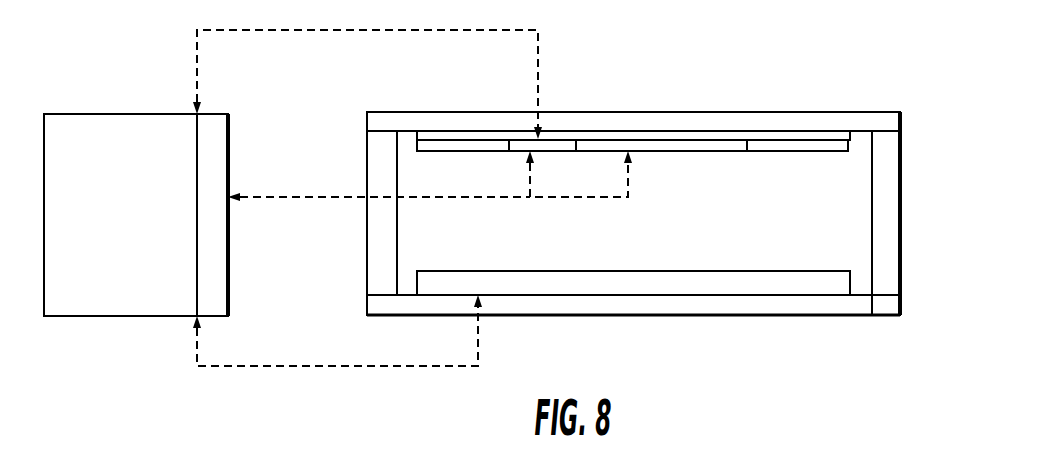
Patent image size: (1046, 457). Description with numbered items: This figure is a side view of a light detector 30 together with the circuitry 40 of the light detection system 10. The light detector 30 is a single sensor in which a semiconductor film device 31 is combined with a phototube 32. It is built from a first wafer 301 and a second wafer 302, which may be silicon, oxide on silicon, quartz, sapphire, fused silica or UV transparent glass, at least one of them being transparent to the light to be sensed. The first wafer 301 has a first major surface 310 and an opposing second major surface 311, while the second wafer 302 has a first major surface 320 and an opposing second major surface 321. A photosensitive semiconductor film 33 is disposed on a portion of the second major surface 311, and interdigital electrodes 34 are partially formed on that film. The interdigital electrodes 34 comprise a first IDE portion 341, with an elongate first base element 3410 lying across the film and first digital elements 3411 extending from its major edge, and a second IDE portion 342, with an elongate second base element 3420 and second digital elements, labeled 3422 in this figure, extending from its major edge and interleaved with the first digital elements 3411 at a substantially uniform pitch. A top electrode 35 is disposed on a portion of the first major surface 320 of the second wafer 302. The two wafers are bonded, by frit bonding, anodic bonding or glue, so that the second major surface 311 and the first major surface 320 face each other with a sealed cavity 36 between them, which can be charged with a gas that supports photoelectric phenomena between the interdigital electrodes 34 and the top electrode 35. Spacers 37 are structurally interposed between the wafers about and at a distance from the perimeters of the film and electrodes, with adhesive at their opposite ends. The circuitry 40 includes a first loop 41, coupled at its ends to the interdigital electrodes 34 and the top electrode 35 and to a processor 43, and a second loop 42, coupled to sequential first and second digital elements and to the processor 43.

The light detection system 10 is at (301, 108).
The light detector 30 is at (875, 112).
The first wafer 301 is at (865, 125).
The first major surface 310 is at (900, 112).
The second major surface 311 is at (900, 140).
The semiconductor film device 31 is at (748, 119).
The phototube 32 is at (712, 298).
The first major surface 320 is at (885, 295).
The second wafer 302 is at (872, 305).
The second major surface 321 is at (893, 318).
The photosensitive semiconductor film 33 is at (718, 132).
The interdigital electrodes 34 is at (657, 137).
The first IDE portion 341 is at (475, 146).
The first base element 3410 is at (452, 153).
The first digital elements 3411 is at (541, 152).
The second IDE portion 342 is at (810, 148).
The second base element 3420 is at (830, 152).
The second electrode 3422 is at (676, 152).
The top electrode 35 is at (778, 283).
The cavity 36 is at (745, 237).
The spacers 37 is at (386, 217).
The circuitry 40 is at (125, 236).
The first loop 41 is at (237, 30).
The second loop 42 is at (338, 198).
The processor 43 is at (208, 276).